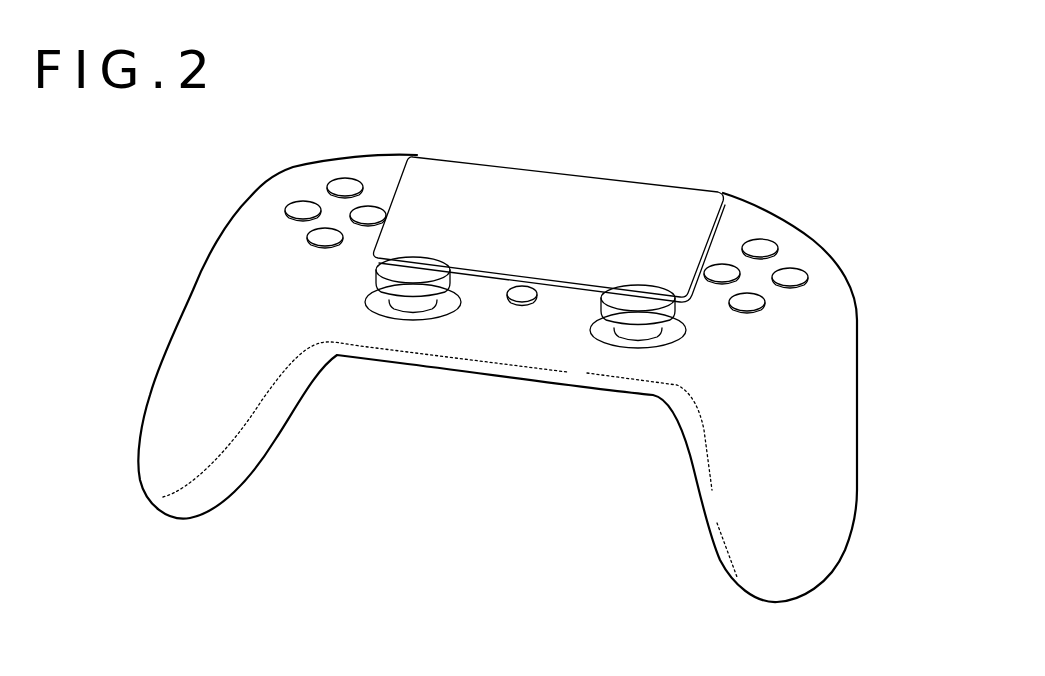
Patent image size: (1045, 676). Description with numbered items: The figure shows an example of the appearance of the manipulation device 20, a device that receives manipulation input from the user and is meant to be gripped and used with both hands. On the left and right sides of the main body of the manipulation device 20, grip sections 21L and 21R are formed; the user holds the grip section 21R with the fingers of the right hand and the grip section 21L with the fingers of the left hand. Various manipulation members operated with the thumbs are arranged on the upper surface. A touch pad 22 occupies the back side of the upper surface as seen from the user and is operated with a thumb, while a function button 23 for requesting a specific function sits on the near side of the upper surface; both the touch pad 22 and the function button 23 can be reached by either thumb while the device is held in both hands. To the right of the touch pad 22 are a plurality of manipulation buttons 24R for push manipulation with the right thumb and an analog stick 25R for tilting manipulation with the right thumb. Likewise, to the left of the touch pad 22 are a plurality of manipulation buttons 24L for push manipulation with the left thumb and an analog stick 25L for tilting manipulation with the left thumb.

The manipulation device 20 is at (504, 378).
The grip section 21L is at (152, 406).
The grip section 21R is at (856, 492).
The touch pad 22 is at (558, 192).
The function button 23 is at (522, 305).
The manipulation buttons 24L is at (397, 185).
The manipulation buttons 24R is at (820, 248).
The analog stick 25L is at (415, 273).
The analog stick 25R is at (640, 303).